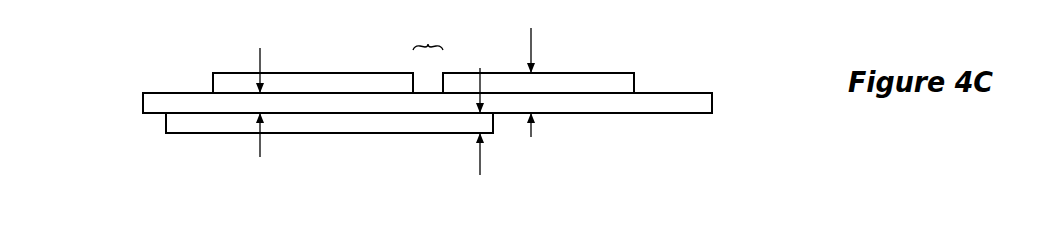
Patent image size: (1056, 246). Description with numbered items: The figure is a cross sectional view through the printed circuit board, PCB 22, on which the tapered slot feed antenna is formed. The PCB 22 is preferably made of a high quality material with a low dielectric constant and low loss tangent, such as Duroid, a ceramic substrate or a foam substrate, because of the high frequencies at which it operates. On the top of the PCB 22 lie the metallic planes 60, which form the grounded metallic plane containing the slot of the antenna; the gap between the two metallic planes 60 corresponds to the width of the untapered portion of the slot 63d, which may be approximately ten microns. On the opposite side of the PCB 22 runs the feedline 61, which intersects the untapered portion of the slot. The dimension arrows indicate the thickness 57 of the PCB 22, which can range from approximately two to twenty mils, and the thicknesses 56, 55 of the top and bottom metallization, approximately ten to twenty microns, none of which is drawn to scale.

The printed circuit board 22 is at (175, 103).
The thickness of upper electrode layer 55 is at (260, 92).
The top metallization thickness 56 is at (530, 71).
The thickness of the PCB 57 is at (483, 109).
The grounded metallic plane 60 is at (305, 83).
The feedline 61 is at (323, 123).
The width of the untapered portion of the slot 63d is at (428, 32).